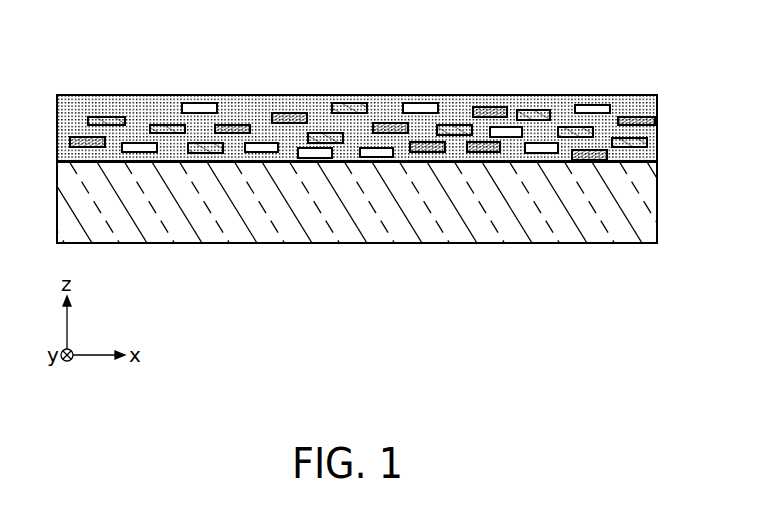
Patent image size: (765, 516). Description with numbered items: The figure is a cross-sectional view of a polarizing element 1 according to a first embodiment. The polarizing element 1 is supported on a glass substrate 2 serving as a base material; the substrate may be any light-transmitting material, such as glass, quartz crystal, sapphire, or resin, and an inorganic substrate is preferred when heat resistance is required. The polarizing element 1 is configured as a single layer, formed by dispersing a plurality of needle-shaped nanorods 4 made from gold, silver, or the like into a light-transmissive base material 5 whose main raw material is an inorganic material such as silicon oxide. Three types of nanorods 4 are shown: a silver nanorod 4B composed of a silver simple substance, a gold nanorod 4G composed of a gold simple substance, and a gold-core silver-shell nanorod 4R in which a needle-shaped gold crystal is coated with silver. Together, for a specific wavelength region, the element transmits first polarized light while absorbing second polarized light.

The polarizing element 1 is at (363, 86).
The glass substrate 2 is at (648, 209).
The nanorods 4 is at (342, 86).
The gold-core silver-shell nanorod 4R is at (73, 137).
The gold nanorod 4G is at (109, 120).
The silver nanorod 4B is at (198, 108).
The base material 5 is at (250, 105).